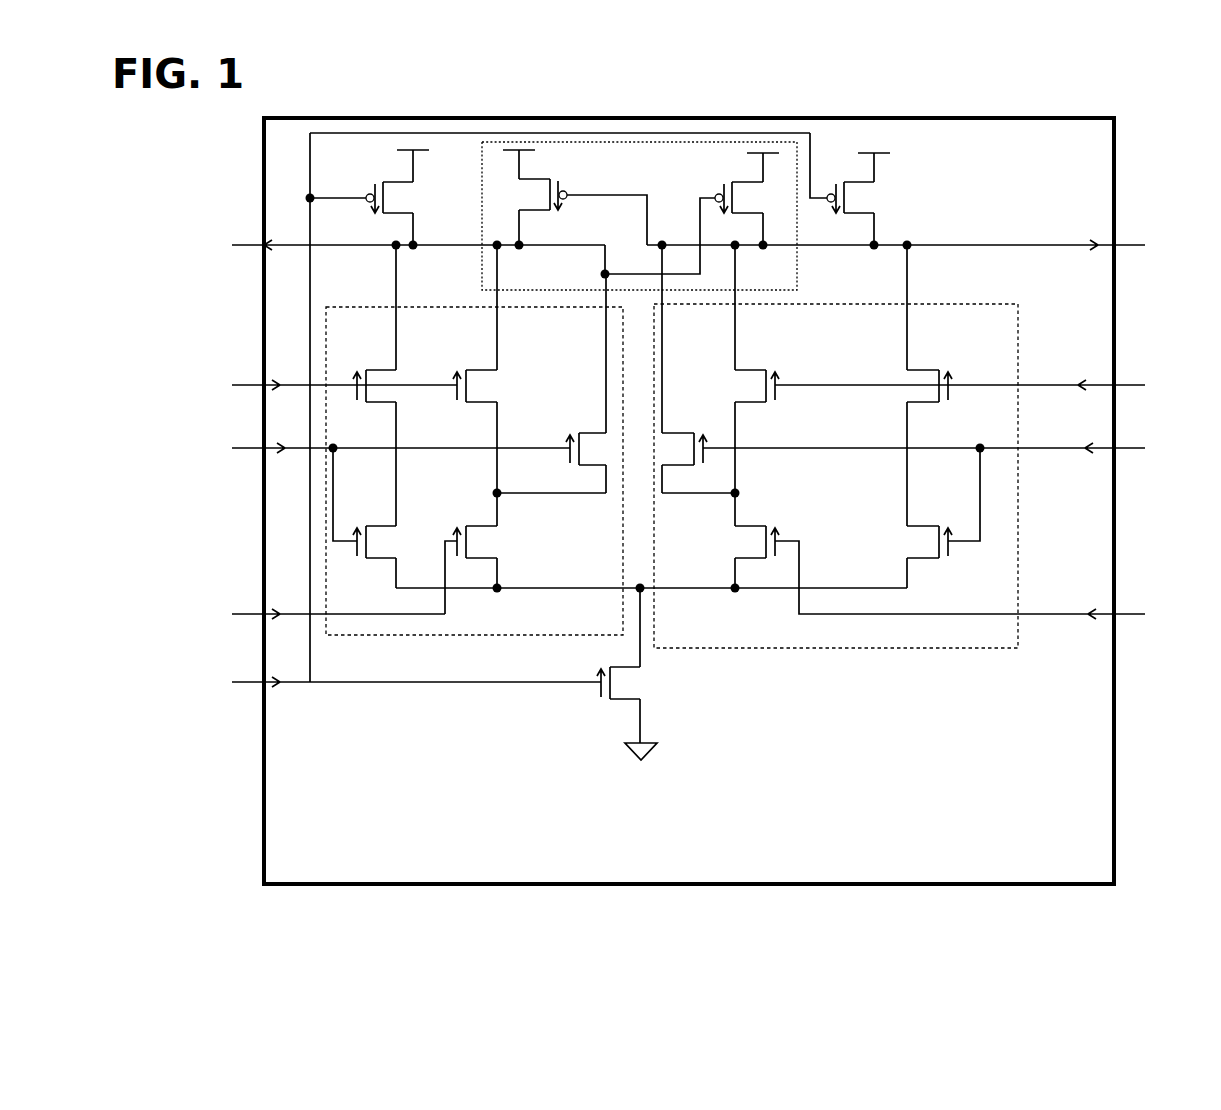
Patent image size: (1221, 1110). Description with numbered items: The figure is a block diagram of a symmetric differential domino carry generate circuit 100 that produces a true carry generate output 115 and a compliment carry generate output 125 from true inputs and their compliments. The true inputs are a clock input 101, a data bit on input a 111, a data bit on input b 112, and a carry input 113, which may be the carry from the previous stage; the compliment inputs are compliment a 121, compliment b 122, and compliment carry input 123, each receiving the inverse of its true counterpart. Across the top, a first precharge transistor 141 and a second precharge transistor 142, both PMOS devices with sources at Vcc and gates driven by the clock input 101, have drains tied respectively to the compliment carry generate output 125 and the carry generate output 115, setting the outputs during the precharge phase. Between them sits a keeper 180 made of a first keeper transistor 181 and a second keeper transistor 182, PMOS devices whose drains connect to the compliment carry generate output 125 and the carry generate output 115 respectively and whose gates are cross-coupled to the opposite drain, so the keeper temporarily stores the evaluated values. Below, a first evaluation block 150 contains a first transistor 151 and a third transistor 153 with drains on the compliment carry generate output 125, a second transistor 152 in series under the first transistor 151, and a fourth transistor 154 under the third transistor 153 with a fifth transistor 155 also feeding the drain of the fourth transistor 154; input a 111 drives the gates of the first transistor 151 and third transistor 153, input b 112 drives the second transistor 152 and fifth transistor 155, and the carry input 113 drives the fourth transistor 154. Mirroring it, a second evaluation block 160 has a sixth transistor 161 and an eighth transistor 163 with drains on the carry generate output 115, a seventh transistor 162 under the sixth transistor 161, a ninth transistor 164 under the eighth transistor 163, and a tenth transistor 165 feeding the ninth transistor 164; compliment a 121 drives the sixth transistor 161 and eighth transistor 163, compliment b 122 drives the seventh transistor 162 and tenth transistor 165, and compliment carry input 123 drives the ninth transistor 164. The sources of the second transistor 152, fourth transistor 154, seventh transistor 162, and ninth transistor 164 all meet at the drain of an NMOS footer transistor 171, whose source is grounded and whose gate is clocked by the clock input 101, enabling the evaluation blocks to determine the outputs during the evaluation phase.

The differential domino carry generate circuit 100 is at (689, 501).
The clock input 101 is at (518, 431).
The input a 111 is at (336, 376).
The input b 112 is at (393, 459).
The carry input 113 is at (316, 580).
The carry generate output 115 is at (916, 216).
The compliment a input 121 is at (1128, 353).
The compliment b input 122 is at (1170, 463).
The compliment carry input 123 is at (1146, 598).
The compliment carry generate output 125 is at (247, 183).
The first precharge transistor 141 is at (367, 196).
The second precharge transistor 142 is at (897, 189).
The first evaluation block 150 is at (532, 635).
The first transistor 151 is at (373, 385).
The second transistor 152 is at (365, 518).
The third transistor 153 is at (529, 385).
The fourth transistor 154 is at (651, 558).
The fifth transistor 155 is at (586, 383).
The second evaluation block 160 is at (933, 650).
The sixth transistor 161 is at (906, 385).
The seventh transistor 162 is at (943, 518).
The eighth transistor 163 is at (750, 385).
The ninth transistor 164 is at (734, 555).
The tenth transistor 165 is at (698, 369).
The footer transistor 171 is at (637, 674).
The keeper 180 is at (639, 216).
The first keeper transistor 181 is at (565, 197).
The second keeper transistor 182 is at (736, 199).